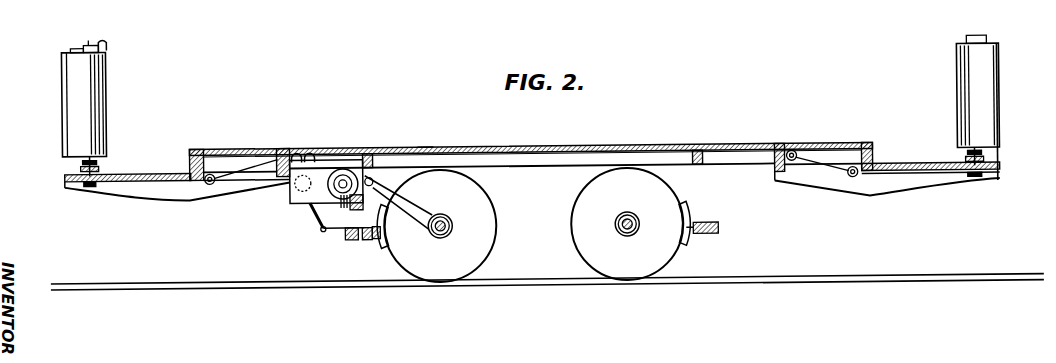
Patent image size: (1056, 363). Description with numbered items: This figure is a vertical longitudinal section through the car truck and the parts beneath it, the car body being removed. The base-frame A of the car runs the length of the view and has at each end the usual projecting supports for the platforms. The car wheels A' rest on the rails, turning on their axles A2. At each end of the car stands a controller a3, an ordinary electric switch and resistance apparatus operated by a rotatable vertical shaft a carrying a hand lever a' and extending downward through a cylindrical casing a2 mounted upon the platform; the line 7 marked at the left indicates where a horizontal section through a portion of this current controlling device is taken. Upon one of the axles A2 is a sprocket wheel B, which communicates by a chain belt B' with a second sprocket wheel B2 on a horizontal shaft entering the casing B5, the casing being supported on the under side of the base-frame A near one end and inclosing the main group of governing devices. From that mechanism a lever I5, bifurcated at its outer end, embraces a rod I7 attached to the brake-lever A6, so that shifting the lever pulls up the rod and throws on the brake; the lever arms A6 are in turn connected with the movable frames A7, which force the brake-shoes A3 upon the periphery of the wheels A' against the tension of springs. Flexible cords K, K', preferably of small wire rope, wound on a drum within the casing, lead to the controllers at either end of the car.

The base-frame A is at (531, 149).
The car wheels A' is at (546, 224).
The axles A2 is at (441, 237).
The brake-shoes A3 is at (389, 245).
The lever arms A6 is at (379, 217).
The movable frames A7 is at (373, 238).
The sprocket wheel B is at (398, 195).
The chain belt B' is at (401, 205).
The second sprocket wheel B2 is at (371, 173).
The casing B5 is at (294, 196).
The lever I5 is at (328, 219).
The rod I7 is at (347, 229).
The flexible cord K is at (533, 186).
The flexible cord K' is at (426, 135).
The section line 7- 7 is at (58, 172).
The rotatable vertical shaft a is at (528, 30).
The hand lever a' is at (117, 45).
The cylindrical casing a2 is at (92, 103).
The controller a3 is at (63, 100).